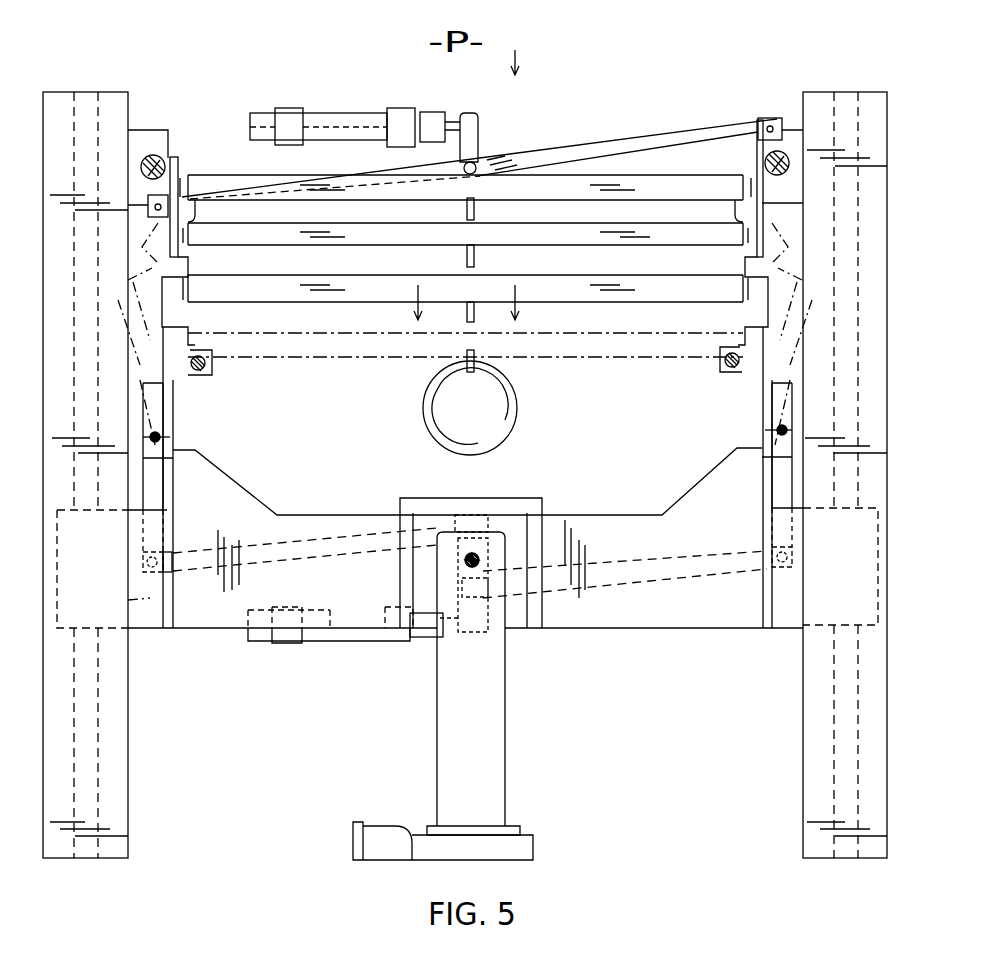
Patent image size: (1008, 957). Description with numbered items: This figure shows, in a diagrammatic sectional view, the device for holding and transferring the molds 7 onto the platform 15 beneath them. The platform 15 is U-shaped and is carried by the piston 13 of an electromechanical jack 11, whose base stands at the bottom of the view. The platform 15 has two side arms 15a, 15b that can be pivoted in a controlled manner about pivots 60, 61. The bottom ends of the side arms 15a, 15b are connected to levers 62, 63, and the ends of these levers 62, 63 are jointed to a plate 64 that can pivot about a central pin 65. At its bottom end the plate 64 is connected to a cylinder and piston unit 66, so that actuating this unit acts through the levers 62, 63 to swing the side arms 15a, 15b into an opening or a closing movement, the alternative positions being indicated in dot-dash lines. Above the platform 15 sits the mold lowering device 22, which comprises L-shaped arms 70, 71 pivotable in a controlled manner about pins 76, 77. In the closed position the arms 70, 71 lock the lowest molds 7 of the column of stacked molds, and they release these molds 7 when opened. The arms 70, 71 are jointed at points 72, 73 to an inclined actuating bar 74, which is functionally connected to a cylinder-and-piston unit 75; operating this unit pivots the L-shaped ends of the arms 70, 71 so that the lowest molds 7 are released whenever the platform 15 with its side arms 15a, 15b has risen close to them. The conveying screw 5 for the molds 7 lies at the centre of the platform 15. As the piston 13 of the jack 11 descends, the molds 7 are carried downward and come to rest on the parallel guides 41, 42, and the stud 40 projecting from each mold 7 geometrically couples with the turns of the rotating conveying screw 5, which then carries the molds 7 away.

The conveying screw 5 is at (467, 402).
The mold 7 is at (530, 184).
The electromechanical jack 11 is at (524, 843).
The piston 13 is at (462, 758).
The platform 15 is at (617, 618).
The side arm 15a is at (158, 411).
The side arm 15b is at (775, 407).
The mold lowering device 22 is at (479, 121).
The stud 40 is at (433, 372).
The parallel guide 41 is at (208, 362).
The parallel guide 42 is at (728, 362).
The pivot 60 is at (168, 432).
The pivot 61 is at (762, 430).
The lever 62 is at (315, 555).
The lever 63 is at (618, 560).
The plate 64 is at (468, 541).
The central pin 65 is at (478, 562).
The cylinder and piston unit 66 is at (336, 640).
The L-shaped arm 70 is at (168, 160).
The L-shaped arm 71 is at (760, 165).
The joint point 72 is at (187, 190).
The joint point 73 is at (770, 123).
The inclined actuating bar 74 is at (625, 148).
The cylinder-and-piston unit 75 is at (465, 139).
The pin 76 is at (783, 153).
The pin 77 is at (141, 157).